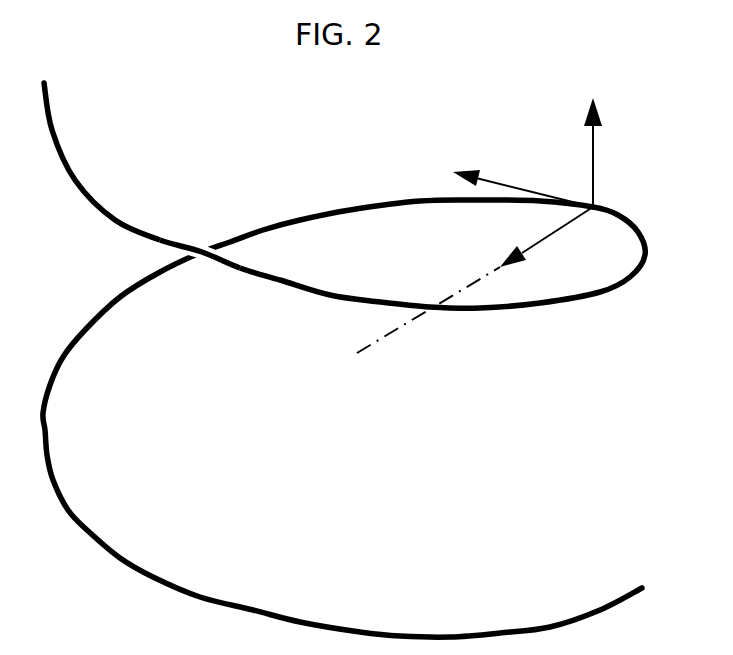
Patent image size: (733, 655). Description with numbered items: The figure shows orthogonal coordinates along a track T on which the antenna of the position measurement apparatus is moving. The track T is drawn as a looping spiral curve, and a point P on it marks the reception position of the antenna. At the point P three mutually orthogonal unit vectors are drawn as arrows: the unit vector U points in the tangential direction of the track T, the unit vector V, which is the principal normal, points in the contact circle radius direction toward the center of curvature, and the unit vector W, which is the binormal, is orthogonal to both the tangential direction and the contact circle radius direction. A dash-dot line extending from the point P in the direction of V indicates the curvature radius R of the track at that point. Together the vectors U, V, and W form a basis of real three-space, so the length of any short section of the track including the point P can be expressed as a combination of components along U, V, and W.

The track T is at (352, 208).
The point P is at (597, 207).
The unit vector in tangential direction U is at (523, 169).
The unit vector in contact circle radius direction V is at (546, 246).
The unit vector orthogonal to tangential and contact circle radius directions W is at (609, 144).
The curvature radius R is at (428, 308).